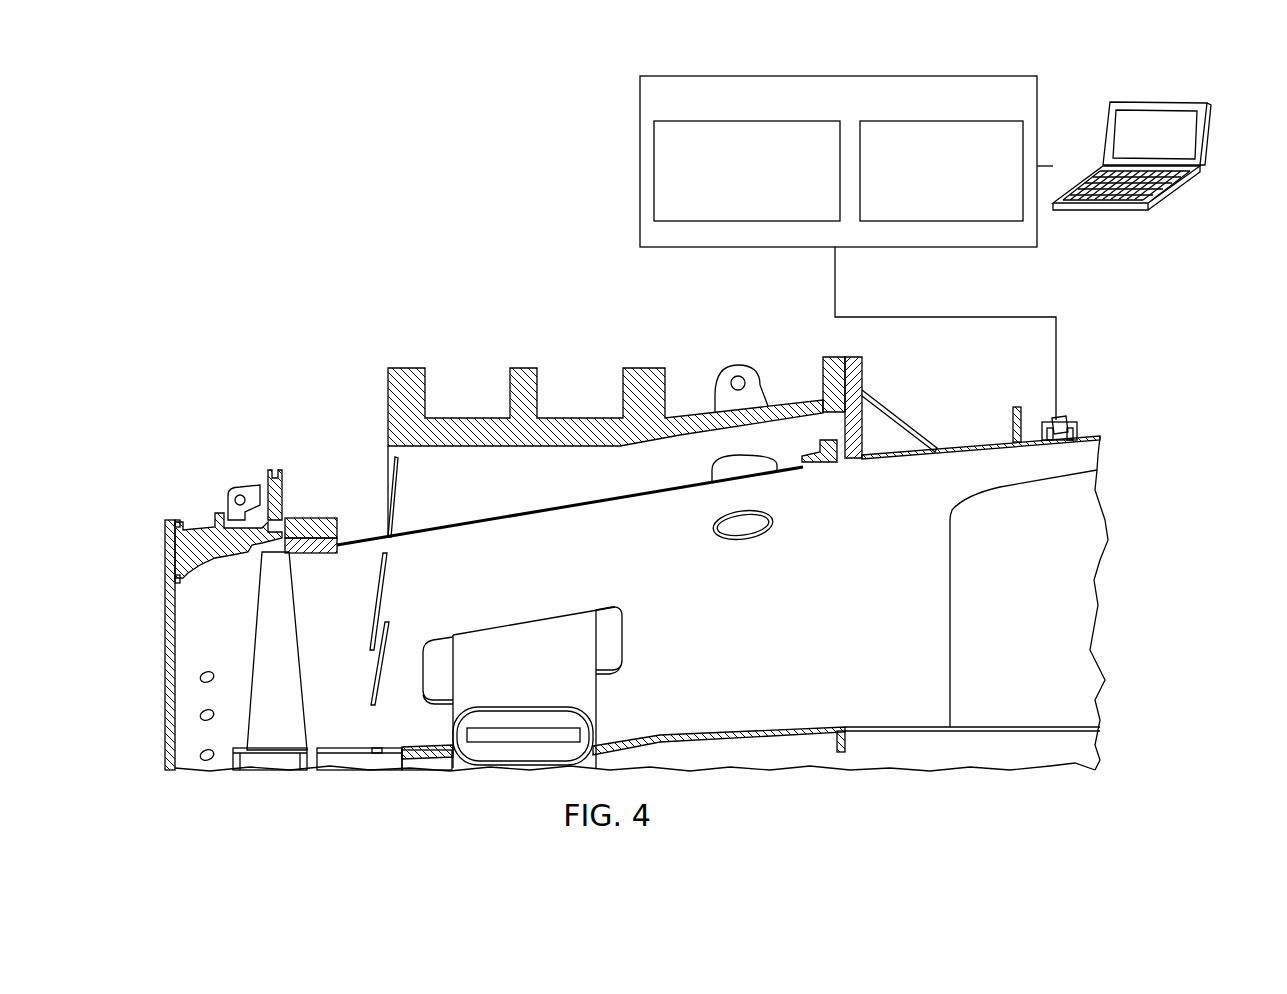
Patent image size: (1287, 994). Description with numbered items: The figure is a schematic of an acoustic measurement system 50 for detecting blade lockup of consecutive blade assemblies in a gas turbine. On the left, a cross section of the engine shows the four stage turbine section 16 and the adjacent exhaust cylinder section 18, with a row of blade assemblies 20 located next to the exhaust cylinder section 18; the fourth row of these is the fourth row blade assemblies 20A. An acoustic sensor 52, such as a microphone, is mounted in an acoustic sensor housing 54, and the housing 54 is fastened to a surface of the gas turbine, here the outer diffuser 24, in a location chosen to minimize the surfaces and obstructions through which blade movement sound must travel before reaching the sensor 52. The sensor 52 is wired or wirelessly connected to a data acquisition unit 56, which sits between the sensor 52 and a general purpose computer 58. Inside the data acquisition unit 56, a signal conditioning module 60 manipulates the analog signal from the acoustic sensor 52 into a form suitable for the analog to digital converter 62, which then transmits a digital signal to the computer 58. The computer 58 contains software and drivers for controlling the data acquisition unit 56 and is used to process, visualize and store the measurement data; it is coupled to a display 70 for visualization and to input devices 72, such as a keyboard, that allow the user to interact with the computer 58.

The turbine section 16 is at (208, 527).
The exhaust cylinder section 18 is at (473, 433).
The blade assemblies 20 is at (209, 684).
The row 4 blade assemblies 20A is at (257, 738).
The outer diffuser 24 is at (960, 447).
The acoustic measurement system 50 is at (598, 178).
The acoustic sensor 52 is at (1058, 420).
The acoustic sensor housing 54 is at (1072, 426).
The data acquisition unit 56 is at (640, 98).
The general purpose computer 58 is at (1156, 195).
The signal conditioning module 60 is at (680, 222).
The analog to digital converter 62 is at (970, 222).
The display 70 is at (1180, 133).
The input devices 72 is at (1193, 170).